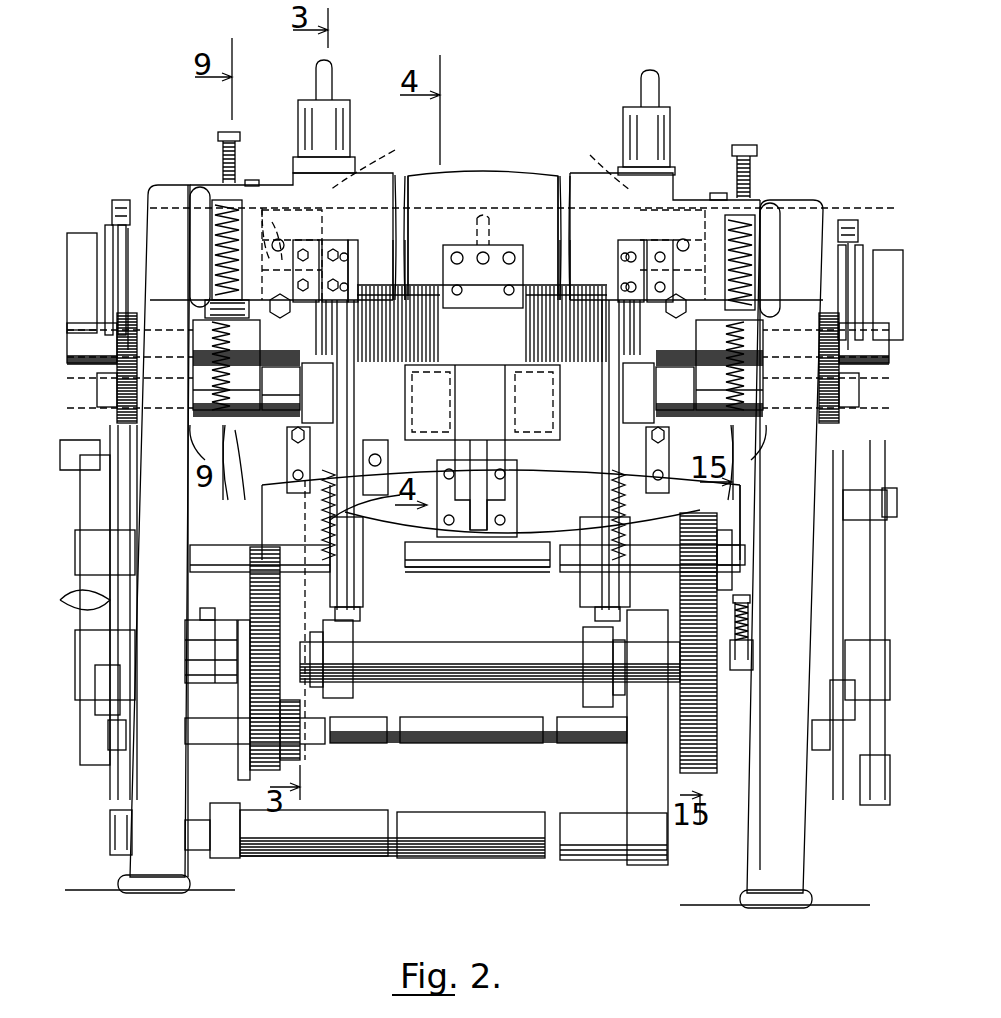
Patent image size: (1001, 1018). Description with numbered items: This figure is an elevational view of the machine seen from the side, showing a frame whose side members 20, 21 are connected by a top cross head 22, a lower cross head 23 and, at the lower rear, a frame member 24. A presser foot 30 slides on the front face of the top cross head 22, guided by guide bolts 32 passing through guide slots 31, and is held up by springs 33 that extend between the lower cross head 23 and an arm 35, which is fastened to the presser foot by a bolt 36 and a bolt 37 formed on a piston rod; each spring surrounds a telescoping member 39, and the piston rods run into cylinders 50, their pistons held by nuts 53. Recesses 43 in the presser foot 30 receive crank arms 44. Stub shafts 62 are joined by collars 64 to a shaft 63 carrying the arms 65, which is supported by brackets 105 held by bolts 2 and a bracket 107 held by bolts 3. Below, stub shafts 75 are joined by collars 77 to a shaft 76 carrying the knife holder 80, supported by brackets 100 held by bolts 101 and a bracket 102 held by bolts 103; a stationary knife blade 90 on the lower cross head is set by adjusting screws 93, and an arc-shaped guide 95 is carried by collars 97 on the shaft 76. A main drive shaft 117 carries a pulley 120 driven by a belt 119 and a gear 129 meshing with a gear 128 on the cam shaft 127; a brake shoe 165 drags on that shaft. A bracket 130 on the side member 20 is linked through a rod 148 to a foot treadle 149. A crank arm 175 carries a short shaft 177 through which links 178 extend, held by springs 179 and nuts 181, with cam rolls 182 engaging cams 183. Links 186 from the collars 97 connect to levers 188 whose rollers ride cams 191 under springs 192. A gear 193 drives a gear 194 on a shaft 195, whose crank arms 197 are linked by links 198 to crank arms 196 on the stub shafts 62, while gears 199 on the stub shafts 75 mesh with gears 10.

The bolts 2 is at (350, 285).
The bolts 3 is at (513, 275).
The gears 10 is at (185, 300).
The side member 20 is at (155, 770).
The side member 21 is at (790, 795).
The top cross head 22 is at (490, 175).
The lower cross head 23 is at (468, 515).
The frame member 24 is at (660, 865).
The presser foot 30 is at (205, 320).
The guide slots 31 is at (282, 242).
The guide bolts 32 is at (320, 263).
The springs 33 is at (212, 228).
The arm 35 is at (210, 185).
The bolt 36 is at (250, 178).
The bolt 37 is at (362, 158).
The telescoping member 39 is at (225, 150).
The recesses 43 is at (265, 210).
The crank arms 44 is at (210, 270).
The cylinders 50 is at (312, 128).
The nuts 53 is at (281, 377).
The stub shafts 62 is at (197, 340).
The shaft 63 is at (297, 361).
The collars 64 is at (195, 375).
The arms 65 is at (375, 300).
The stub shafts 75 is at (195, 420).
The shaft 76 is at (280, 415).
The collars 77 is at (270, 470).
The knife holder 80 is at (525, 430).
The stationary knife blade 90 is at (369, 469).
The adjusting screws 93 is at (365, 507).
The guide 95 is at (430, 378).
The collars 97 is at (330, 440).
The brackets 100 is at (465, 542).
The bolts 101 is at (300, 490).
The bracket 102 is at (505, 505).
The bolts 103 is at (477, 553).
The brackets 105 is at (340, 250).
The bracket 107 is at (500, 250).
The main drive shaft 117 is at (412, 745).
The belt 119 is at (627, 845).
The pulley 120 is at (625, 760).
The cam shaft 127 is at (440, 655).
The gear 128 is at (250, 583).
The gear 129 is at (255, 760).
The bracket 130 is at (200, 620).
The rod 148 is at (205, 790).
The foot treadle 149 is at (232, 860).
The brake shoe 165 is at (755, 630).
The crank arm 175 is at (108, 225).
The short shaft 177 is at (124, 225).
The links 178 is at (112, 508).
The springs 179 is at (118, 200).
The nuts 181 is at (128, 225).
The cam rolls 182 is at (112, 735).
The cams 183 is at (95, 690).
The link 186 is at (345, 560).
The levers 188 is at (350, 620).
The cams 191 is at (345, 700).
The springs 192 is at (310, 570).
The gear 193 is at (705, 770).
The gear 194 is at (736, 540).
The shaft 195 is at (497, 572).
The crank arms 196 is at (75, 233).
The crank arms 197 is at (850, 600).
The links 198 is at (112, 425).
The gears 199 is at (140, 420).